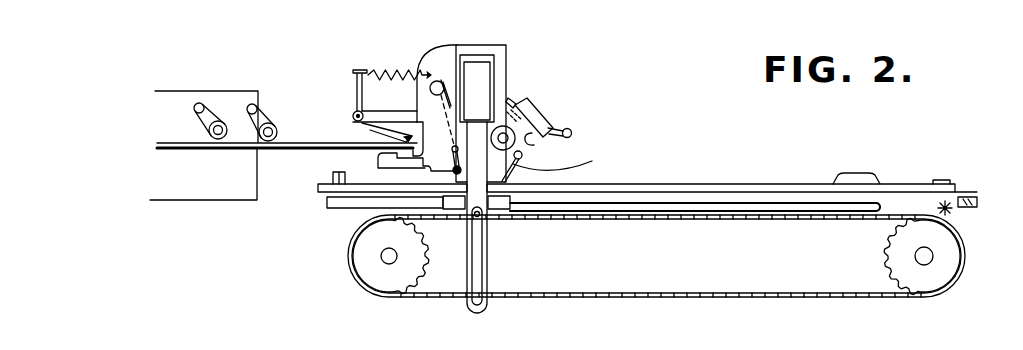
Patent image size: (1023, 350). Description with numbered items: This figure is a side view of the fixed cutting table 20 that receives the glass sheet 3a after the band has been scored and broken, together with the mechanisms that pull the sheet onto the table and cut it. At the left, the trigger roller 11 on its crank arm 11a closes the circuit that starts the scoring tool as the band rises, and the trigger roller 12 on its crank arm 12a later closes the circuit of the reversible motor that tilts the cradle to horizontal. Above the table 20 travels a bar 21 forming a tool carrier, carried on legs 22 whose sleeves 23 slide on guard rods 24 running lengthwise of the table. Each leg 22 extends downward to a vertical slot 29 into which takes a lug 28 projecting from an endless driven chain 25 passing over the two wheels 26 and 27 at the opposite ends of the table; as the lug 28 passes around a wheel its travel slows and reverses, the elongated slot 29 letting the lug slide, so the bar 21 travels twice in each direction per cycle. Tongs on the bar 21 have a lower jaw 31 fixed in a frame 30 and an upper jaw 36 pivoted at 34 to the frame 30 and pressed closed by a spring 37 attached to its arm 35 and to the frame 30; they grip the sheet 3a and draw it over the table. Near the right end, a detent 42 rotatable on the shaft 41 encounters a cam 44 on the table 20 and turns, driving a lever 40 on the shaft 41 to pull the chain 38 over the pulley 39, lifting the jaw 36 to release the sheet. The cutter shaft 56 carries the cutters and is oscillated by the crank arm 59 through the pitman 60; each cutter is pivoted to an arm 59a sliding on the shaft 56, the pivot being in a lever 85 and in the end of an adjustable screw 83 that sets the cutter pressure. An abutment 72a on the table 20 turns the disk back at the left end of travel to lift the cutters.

The sheet of glass 3a is at (182, 152).
The trigger roller 11 is at (221, 121).
The crank arm 11a is at (199, 102).
The trigger roller 12 is at (275, 128).
The crank arm 12a is at (263, 110).
The cutting table 20 is at (692, 191).
The bar 21 is at (493, 72).
The legs 22 is at (488, 232).
The sleeves 23 is at (538, 191).
The guard rods 24 is at (640, 210).
The endless driven chain 25 is at (732, 219).
The wheel 26 is at (928, 286).
The wheel 27 is at (372, 279).
The lug 28 is at (476, 220).
The vertical slot 29 is at (480, 285).
The frame 30 is at (474, 44).
The lower jaw 31 is at (392, 167).
The pivot 34 is at (353, 117).
The arm 35 is at (357, 70).
The movable jaw 36 is at (400, 139).
The spring 37 is at (392, 70).
The chain 38 is at (450, 106).
The pulley 39 is at (439, 81).
The lever 40 is at (435, 100).
The shaft 41 is at (453, 170).
The detent 42 is at (456, 183).
The cam 44 is at (862, 178).
The shaft 56 is at (531, 143).
The crank arm 59 is at (519, 160).
The arm 59a is at (532, 110).
The pitman 60 is at (564, 160).
The abutment 72a is at (339, 177).
The adjustable screw 83 is at (548, 126).
The lever 85 is at (572, 135).